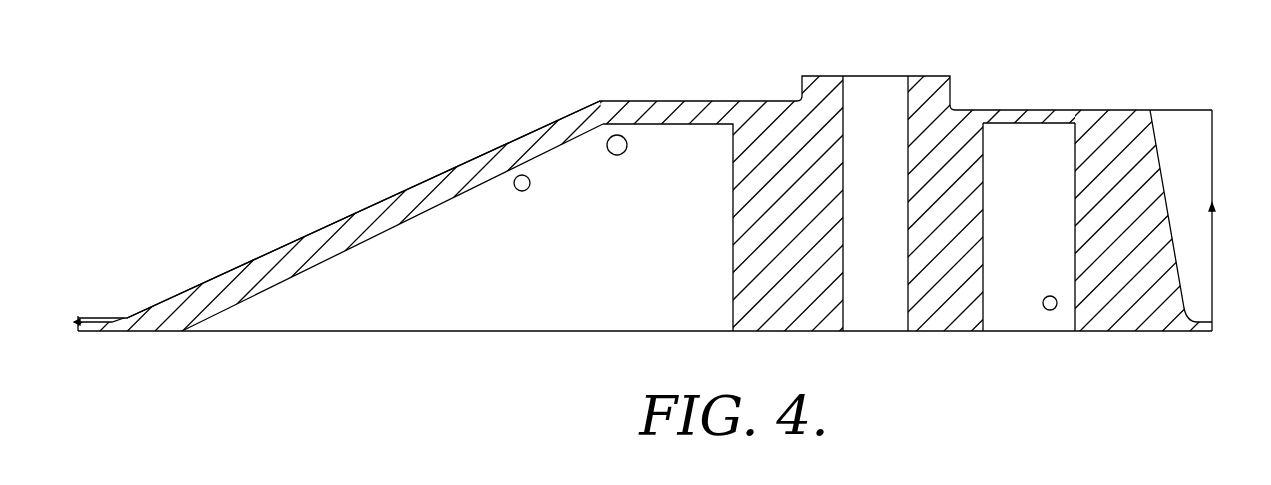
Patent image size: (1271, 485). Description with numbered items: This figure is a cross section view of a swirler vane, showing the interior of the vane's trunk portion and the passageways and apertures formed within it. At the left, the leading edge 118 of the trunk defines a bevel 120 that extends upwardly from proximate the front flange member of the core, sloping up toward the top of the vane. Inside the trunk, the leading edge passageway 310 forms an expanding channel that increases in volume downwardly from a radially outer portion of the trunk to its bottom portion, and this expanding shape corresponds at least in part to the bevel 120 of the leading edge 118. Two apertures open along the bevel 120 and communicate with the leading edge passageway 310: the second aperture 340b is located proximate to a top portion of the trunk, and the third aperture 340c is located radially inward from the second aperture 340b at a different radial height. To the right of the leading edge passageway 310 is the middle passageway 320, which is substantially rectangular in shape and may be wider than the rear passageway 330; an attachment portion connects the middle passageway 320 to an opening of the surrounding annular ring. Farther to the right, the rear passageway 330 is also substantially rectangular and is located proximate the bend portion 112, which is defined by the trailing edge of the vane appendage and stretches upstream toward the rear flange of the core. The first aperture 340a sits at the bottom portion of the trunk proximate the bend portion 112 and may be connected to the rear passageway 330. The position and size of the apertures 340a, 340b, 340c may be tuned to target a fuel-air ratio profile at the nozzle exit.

The bend portion 112 is at (1152, 186).
The leading edge 118 is at (413, 185).
The bevel 120 is at (309, 242).
The leading edge passageway 310 is at (497, 281).
The middle passageway 320 is at (855, 244).
The rear passageway 330 is at (1008, 244).
The first aperture 340a is at (1049, 310).
The second aperture 340b is at (617, 135).
The third aperture 340c is at (523, 175).